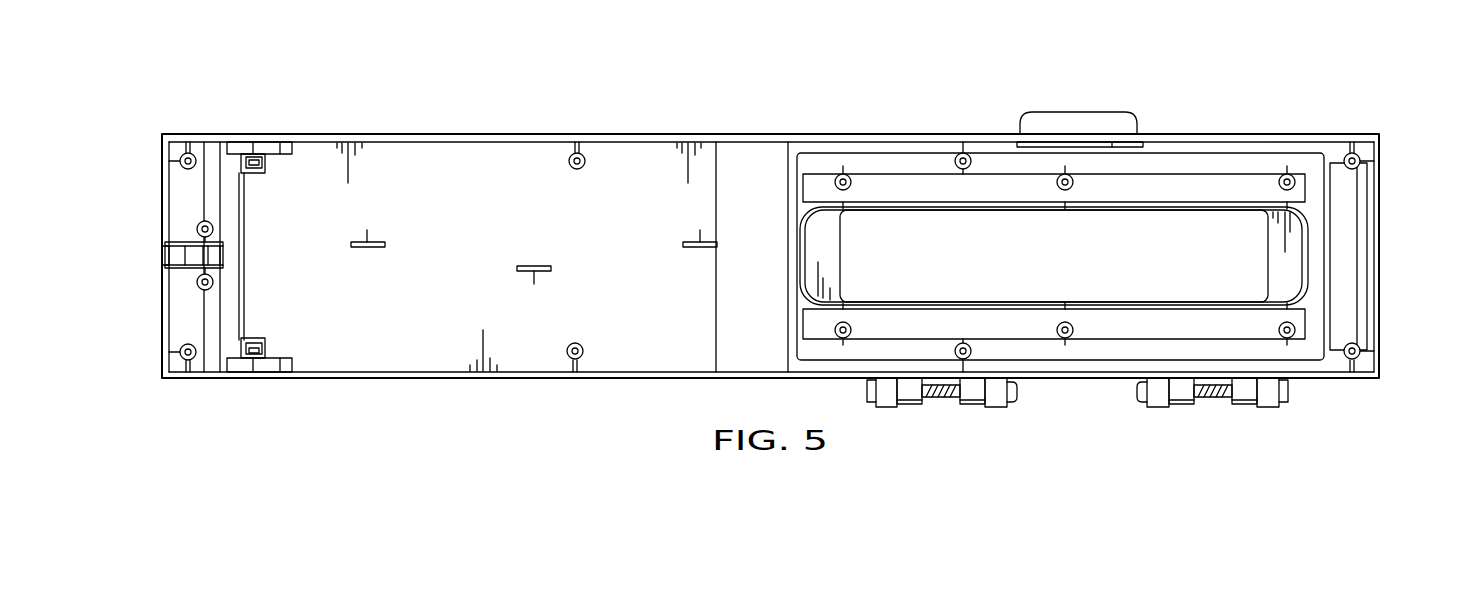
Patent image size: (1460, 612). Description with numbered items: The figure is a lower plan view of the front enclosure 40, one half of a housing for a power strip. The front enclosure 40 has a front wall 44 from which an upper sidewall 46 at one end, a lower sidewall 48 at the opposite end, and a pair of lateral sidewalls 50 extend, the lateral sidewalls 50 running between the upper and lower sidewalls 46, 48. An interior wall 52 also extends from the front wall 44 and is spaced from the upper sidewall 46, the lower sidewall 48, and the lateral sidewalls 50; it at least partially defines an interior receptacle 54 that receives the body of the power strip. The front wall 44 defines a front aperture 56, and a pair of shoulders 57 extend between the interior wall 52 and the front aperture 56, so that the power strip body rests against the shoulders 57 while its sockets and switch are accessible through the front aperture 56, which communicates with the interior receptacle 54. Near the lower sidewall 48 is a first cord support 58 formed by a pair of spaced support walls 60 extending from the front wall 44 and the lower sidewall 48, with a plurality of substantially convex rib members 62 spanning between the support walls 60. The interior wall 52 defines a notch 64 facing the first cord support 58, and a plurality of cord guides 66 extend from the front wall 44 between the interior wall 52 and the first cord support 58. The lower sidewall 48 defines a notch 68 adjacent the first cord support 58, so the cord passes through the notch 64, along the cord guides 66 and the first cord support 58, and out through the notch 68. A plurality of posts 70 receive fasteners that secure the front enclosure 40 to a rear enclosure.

The front enclosure 40 is at (517, 102).
The front wall 44 is at (650, 153).
The upper sidewall 46 is at (1381, 178).
The lower sidewall 48 is at (162, 177).
The lateral sidewalls 50 is at (768, 134).
The interior wall 52 is at (1123, 212).
The interior receptacle 54 is at (1290, 263).
The front aperture 56 is at (843, 267).
The shoulders 57 is at (827, 238).
The first cord support 58 is at (242, 236).
The support walls 60 is at (180, 240).
The rib members 62 is at (163, 252).
The notch 64 is at (792, 243).
The cord guides 66 is at (367, 250).
The notch 68 is at (158, 265).
The posts 70 is at (577, 170).